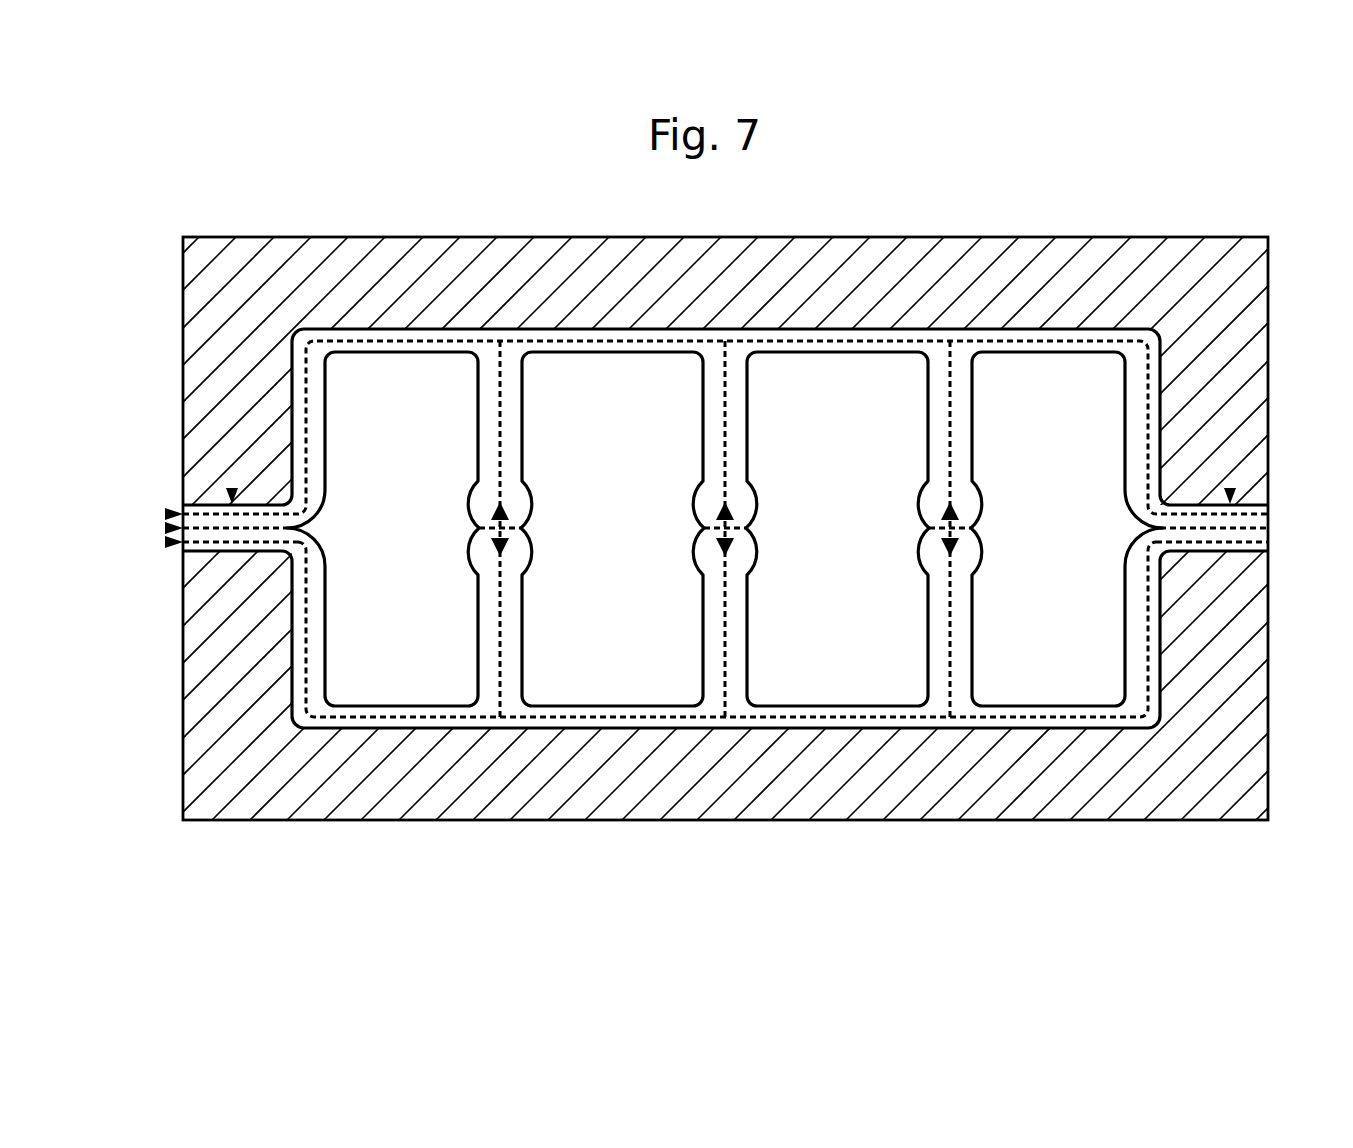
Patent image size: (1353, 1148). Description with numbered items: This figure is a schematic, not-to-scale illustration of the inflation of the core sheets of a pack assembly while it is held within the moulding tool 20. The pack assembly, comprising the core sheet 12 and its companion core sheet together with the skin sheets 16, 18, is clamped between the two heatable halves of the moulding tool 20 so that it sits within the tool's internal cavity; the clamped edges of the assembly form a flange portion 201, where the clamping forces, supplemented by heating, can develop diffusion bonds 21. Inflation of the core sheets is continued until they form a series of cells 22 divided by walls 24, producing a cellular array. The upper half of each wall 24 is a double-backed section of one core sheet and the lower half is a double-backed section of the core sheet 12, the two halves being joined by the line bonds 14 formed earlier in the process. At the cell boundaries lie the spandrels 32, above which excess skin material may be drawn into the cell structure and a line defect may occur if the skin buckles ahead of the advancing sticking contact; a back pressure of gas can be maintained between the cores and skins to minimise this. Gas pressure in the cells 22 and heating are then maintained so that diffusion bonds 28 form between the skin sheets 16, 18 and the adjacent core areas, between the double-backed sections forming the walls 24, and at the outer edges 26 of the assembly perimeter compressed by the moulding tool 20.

The core sheet 12 is at (392, 705).
The line bonds 14 is at (512, 528).
The skin sheet 16 is at (1148, 330).
The skin sheet 18 is at (1026, 729).
The moulding tool 20 is at (297, 265).
The diffusion bonds 21 is at (168, 514).
The cells 22 is at (416, 603).
The walls 24 is at (524, 653).
The outer edges 26 is at (238, 548).
The diffusion bonds 28 is at (393, 338).
The spandrels 32 is at (507, 338).
The flange portion 201 is at (230, 489).